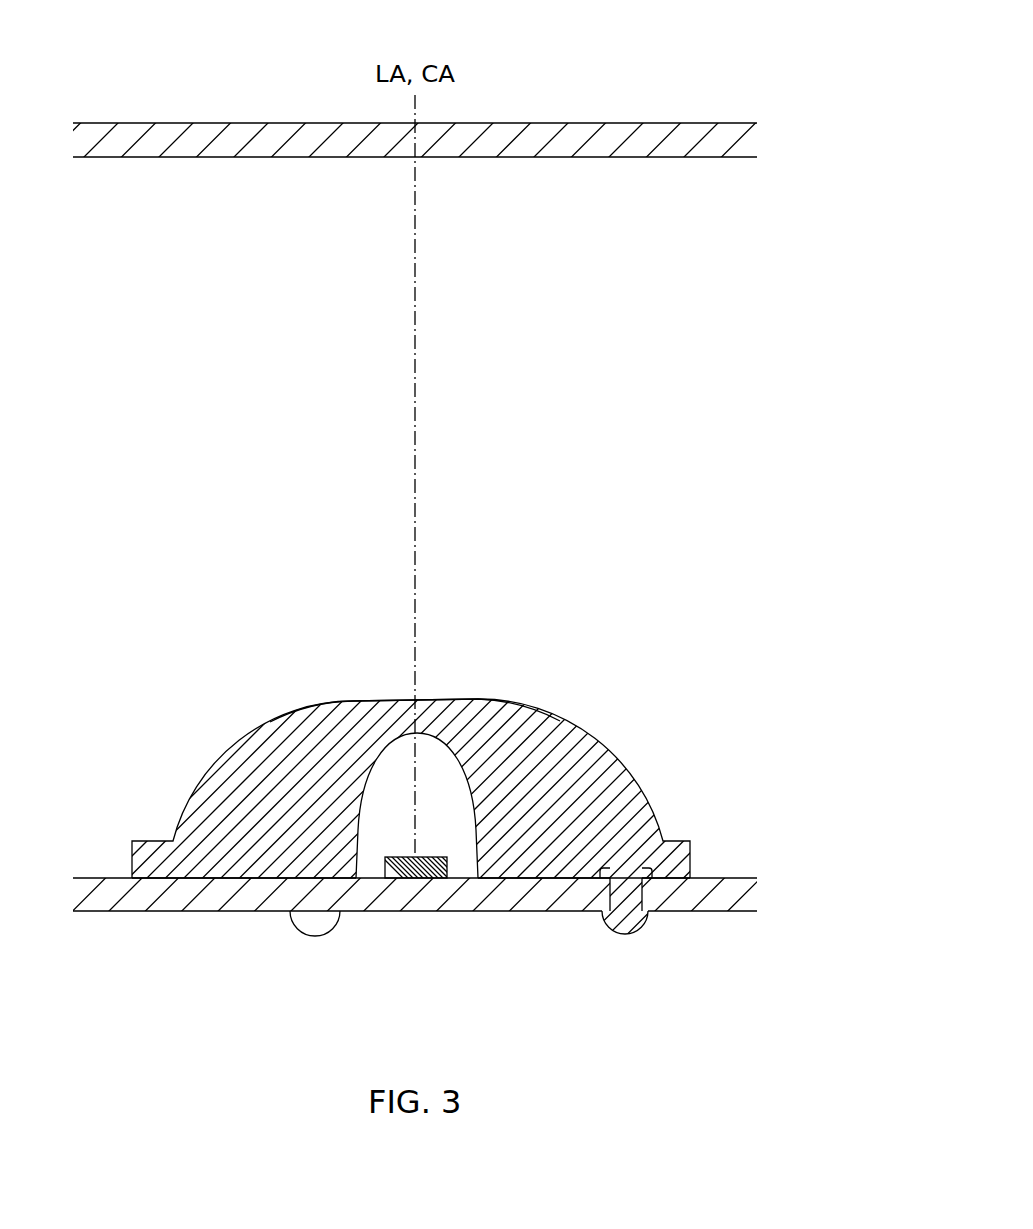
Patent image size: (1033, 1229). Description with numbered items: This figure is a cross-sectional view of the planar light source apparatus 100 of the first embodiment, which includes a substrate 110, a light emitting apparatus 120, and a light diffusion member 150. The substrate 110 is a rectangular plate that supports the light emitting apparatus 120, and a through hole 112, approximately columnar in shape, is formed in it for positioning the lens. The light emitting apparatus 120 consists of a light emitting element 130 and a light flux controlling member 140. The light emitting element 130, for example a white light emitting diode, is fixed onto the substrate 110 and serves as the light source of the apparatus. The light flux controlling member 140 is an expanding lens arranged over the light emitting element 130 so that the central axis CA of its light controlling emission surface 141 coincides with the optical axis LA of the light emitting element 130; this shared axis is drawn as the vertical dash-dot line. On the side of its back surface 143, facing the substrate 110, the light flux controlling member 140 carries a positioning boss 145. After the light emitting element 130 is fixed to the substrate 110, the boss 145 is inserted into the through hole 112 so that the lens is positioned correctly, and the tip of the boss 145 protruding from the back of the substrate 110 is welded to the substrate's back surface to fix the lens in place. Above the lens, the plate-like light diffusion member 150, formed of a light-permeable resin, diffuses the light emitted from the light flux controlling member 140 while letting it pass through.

The planar light source apparatus 100 is at (727, 88).
The substrate 110 is at (167, 900).
The through hole 112 is at (612, 893).
The light emitting apparatus 120 is at (454, 816).
The light emitting element 130 is at (403, 880).
The light flux controlling member 140 is at (258, 762).
The light controlling emission surface 141 is at (332, 700).
The back surface 143 is at (253, 880).
The positioning boss 145 is at (628, 892).
The light diffusion member 150 is at (110, 150).